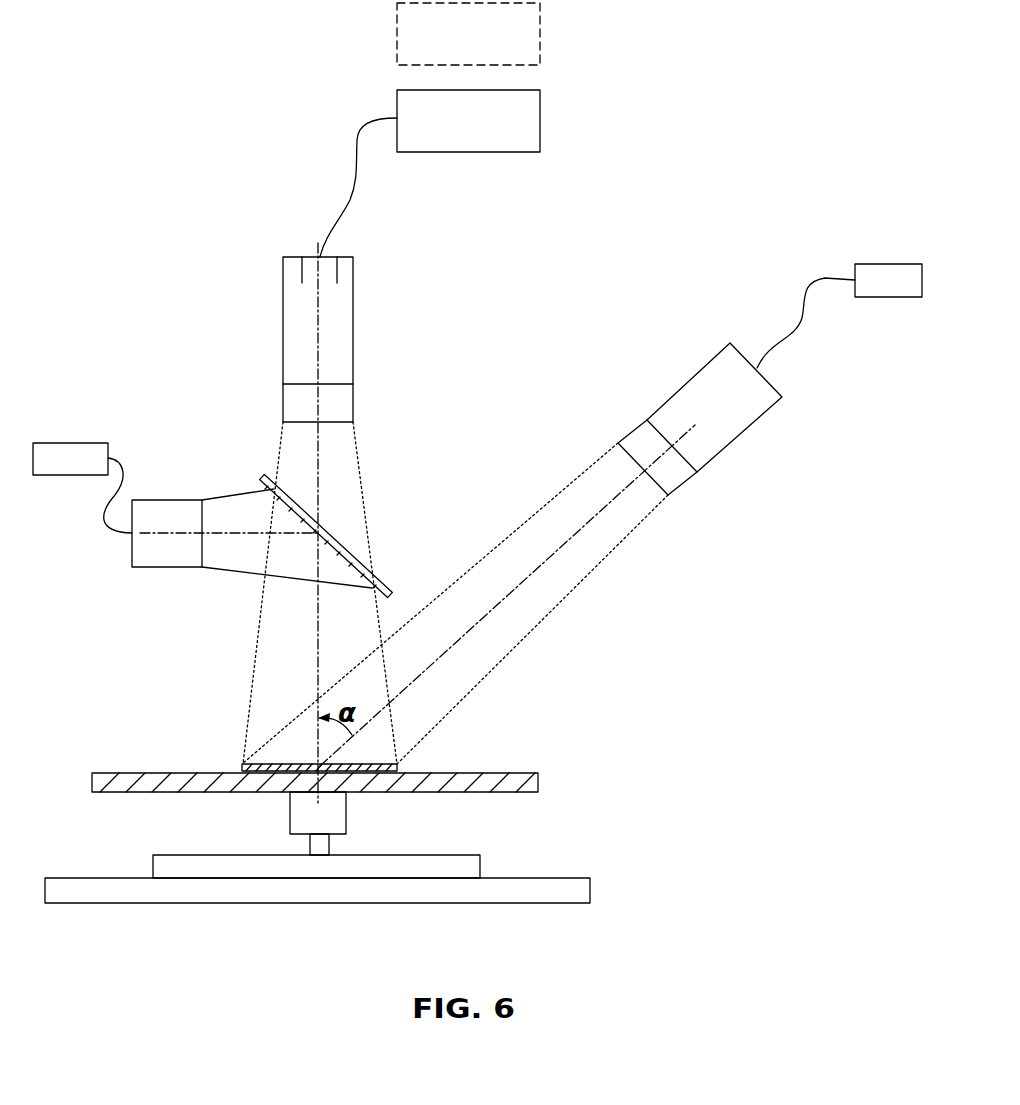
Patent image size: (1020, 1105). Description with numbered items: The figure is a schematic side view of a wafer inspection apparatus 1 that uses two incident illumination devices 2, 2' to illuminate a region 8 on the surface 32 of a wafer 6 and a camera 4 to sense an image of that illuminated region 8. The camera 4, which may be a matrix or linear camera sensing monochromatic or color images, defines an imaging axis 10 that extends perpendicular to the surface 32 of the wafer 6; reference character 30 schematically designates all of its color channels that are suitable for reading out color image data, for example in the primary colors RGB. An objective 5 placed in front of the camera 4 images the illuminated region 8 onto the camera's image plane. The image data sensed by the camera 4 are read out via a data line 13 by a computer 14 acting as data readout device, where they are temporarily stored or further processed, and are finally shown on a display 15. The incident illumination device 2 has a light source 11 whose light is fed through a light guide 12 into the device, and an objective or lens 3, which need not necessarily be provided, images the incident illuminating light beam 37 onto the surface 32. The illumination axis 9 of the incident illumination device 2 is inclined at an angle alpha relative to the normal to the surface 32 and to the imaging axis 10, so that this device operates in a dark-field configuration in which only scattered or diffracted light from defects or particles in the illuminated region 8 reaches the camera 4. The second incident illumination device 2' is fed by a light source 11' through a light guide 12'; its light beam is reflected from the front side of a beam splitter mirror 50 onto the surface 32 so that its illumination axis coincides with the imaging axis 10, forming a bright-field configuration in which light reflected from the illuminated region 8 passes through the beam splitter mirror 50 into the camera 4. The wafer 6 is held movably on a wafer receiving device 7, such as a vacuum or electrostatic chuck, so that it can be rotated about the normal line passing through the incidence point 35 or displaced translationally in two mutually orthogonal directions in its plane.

The wafer inspection apparatus 1 is at (170, 346).
The incident illumination device 2 is at (725, 410).
The incident illumination device 2' is at (252, 510).
The objective or lens 3 is at (675, 485).
The camera 4 is at (340, 318).
The objective 5 is at (340, 404).
The wafer 6 is at (538, 783).
The wafer receiving device 7 is at (340, 812).
The illuminated region 8 is at (242, 764).
The illumination axis 9 is at (520, 585).
The imaging axis 10 is at (320, 490).
The light source 11 is at (888, 237).
The light source 11' is at (70, 421).
The light guide 12 is at (806, 280).
The light guide 12' is at (89, 519).
The data line 13 is at (357, 171).
The computer 14 is at (540, 125).
The display 15 is at (540, 12).
The color channels 30 is at (345, 280).
The surface 32 is at (128, 768).
The incidence point 35 is at (315, 762).
The incident illuminating light beam 37 is at (615, 550).
The beam splitter mirror 50 is at (262, 478).